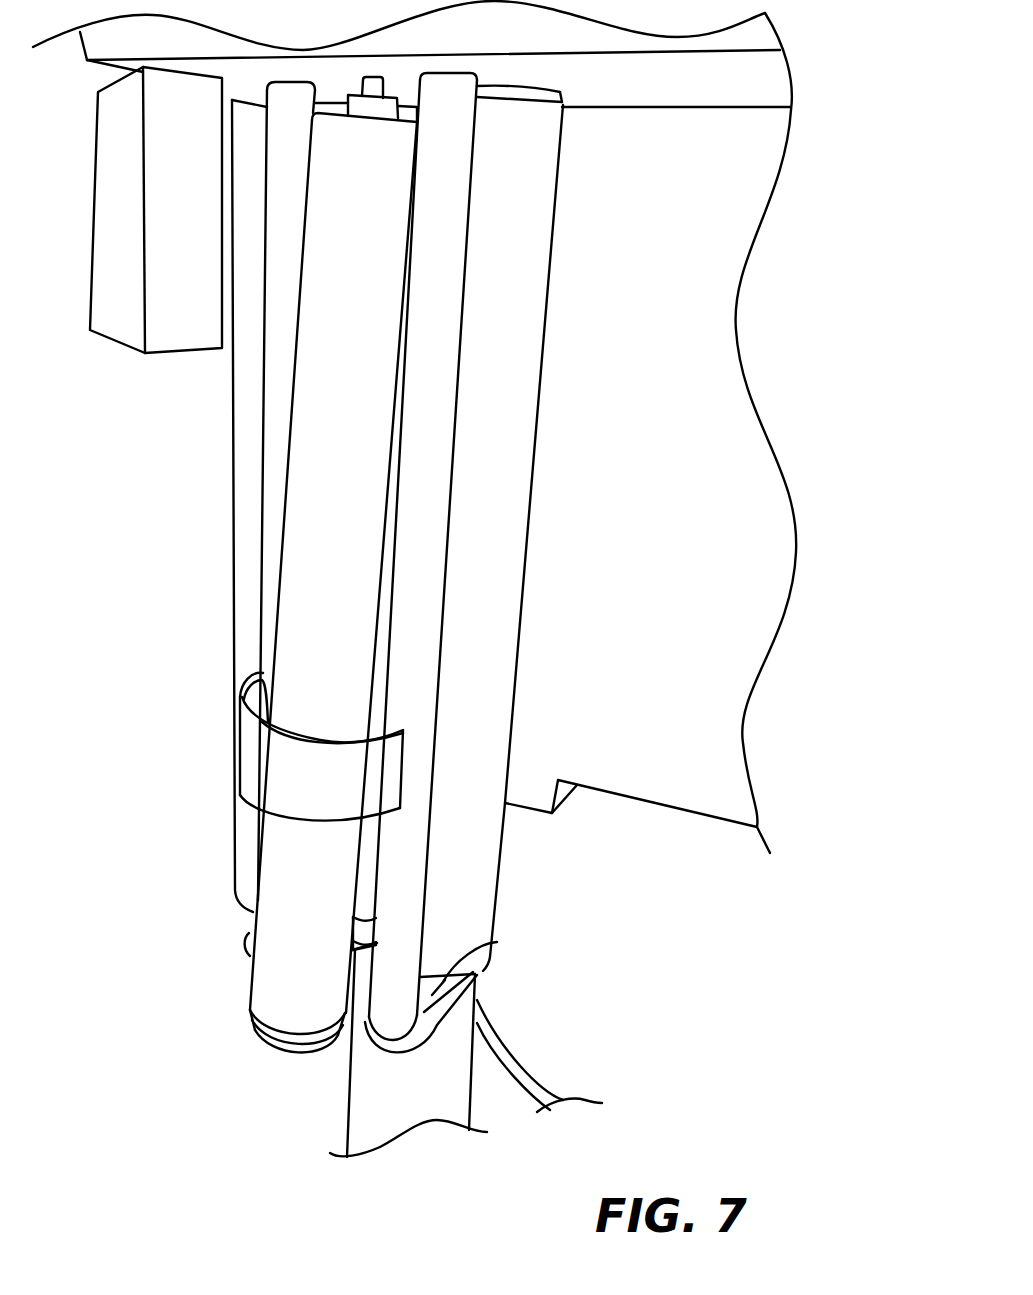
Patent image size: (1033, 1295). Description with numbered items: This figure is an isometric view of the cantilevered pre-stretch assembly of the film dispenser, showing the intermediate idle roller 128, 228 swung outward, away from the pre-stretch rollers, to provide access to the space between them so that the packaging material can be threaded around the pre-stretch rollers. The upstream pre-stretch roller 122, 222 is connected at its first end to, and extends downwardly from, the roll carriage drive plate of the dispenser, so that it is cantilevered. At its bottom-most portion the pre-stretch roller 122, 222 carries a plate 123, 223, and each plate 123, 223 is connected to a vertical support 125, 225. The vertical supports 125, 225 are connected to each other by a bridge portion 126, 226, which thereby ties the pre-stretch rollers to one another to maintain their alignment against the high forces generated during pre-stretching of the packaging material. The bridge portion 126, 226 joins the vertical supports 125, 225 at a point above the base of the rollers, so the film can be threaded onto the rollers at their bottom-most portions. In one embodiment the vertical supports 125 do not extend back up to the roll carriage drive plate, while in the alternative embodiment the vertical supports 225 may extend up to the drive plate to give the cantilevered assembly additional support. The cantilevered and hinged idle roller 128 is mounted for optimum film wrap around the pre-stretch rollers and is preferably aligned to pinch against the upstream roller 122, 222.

The first upstream pre-stretch roller 122 is at (414, 486).
The pre-stretch roller 222 is at (540, 701).
The plate 123 is at (466, 1037).
The plate 223 is at (497, 942).
The vertical support 125 is at (494, 556).
The vertical support 225 is at (432, 498).
The bridge portion 126 is at (321, 747).
The bridge portion 226 is at (345, 780).
The intermediate idle roller 128 is at (333, 564).
The cylinder body 228 is at (367, 348).